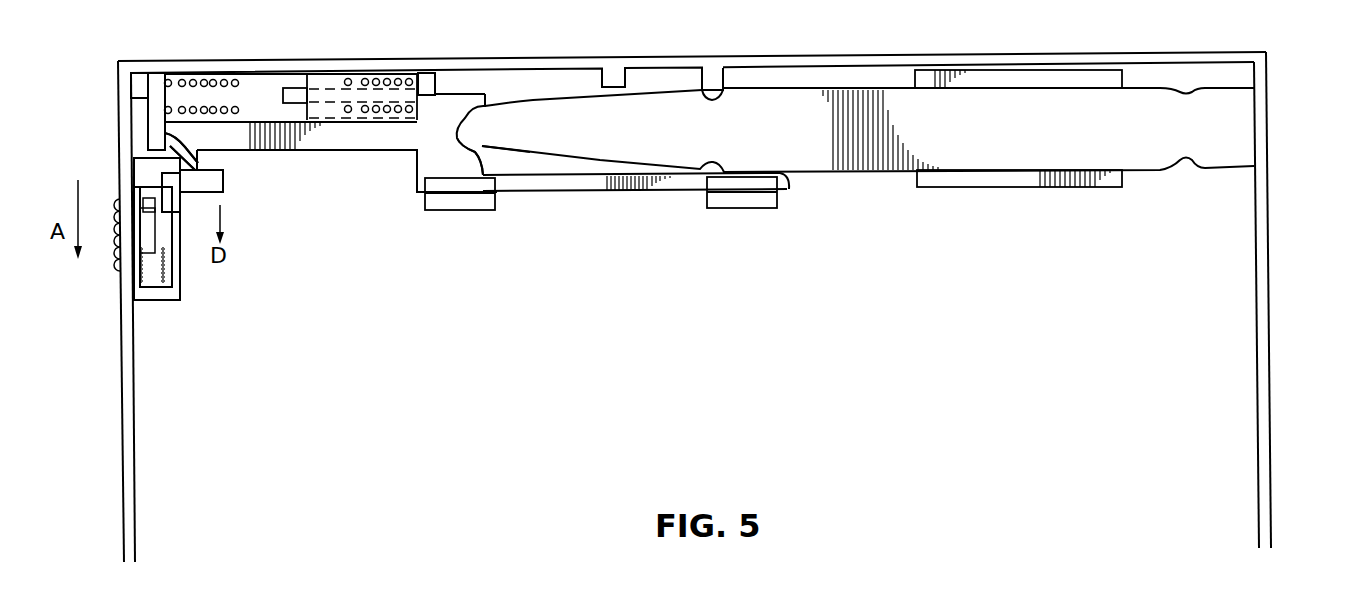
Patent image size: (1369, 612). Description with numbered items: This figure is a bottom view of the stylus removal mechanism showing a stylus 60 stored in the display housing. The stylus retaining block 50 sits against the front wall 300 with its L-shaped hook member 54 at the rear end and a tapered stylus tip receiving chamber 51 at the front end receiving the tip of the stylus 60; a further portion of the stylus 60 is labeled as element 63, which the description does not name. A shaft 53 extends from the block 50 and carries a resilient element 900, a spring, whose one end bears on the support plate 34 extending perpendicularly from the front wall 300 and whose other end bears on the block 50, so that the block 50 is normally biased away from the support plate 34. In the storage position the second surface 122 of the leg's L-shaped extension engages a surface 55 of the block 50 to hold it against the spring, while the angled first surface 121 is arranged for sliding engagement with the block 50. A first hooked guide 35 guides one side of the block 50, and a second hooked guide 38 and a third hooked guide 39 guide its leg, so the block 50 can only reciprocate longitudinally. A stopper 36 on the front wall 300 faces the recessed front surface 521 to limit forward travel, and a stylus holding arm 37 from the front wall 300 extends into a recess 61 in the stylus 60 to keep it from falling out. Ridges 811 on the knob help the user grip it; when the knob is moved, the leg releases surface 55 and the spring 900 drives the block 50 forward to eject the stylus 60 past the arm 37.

The front wall 300 is at (863, 55).
The stylus 60 is at (1280, 108).
The recess 61 is at (720, 100).
The tongue 63 is at (488, 140).
The stylus retaining block 50 is at (480, 107).
The stylus tip receiving chamber 51 is at (462, 150).
The shaft 53 is at (295, 87).
The L-shaped hook member 54 is at (327, 137).
The surface 55 is at (165, 136).
The support plate 34 is at (140, 97).
The first hooked guide 35 is at (427, 73).
The stopper 36 is at (613, 78).
The stylus holding arm 37 is at (713, 78).
The second hooked guide 38 is at (740, 200).
The third hooked guide 39 is at (457, 202).
The angled first surface 121 is at (223, 172).
The second surface 122 is at (203, 168).
The recessed front surface 521 is at (445, 80).
The ridges 811 is at (116, 266).
The resilient element 900 is at (193, 80).